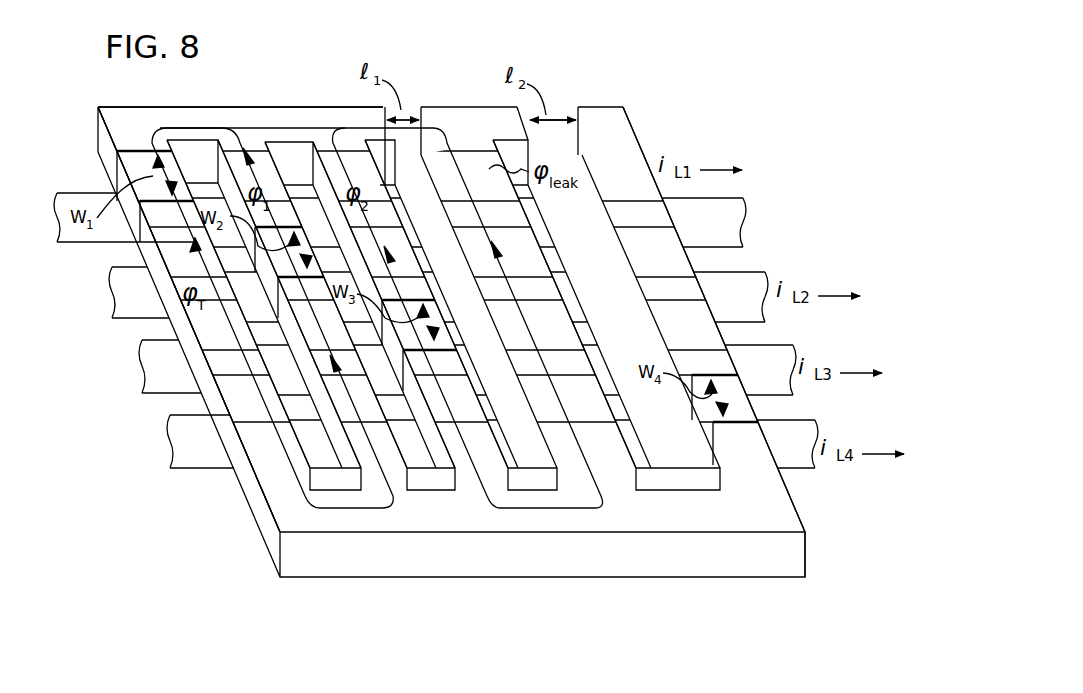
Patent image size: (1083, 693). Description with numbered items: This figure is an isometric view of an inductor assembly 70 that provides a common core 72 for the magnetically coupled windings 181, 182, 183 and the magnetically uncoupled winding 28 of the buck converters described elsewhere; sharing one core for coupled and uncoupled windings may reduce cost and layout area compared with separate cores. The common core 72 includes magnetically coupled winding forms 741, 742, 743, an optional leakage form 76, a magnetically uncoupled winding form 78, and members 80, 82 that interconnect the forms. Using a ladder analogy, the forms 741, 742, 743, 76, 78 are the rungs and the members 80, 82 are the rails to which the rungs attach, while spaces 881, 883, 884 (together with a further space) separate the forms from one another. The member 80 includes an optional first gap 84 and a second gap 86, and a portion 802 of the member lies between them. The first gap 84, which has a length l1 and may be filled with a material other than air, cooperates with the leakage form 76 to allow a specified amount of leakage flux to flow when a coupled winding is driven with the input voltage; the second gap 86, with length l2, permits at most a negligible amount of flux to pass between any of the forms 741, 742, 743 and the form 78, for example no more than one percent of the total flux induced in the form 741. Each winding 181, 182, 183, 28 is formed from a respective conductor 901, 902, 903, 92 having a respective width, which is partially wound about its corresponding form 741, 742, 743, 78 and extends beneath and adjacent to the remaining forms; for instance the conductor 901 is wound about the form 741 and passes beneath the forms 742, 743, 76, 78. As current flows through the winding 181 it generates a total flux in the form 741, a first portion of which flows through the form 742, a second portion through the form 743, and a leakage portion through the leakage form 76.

The inductor assembly 70 is at (208, 549).
The common core 72 is at (814, 589).
The magnetically coupled winding form 741 is at (204, 319).
The magnetically coupled winding form 742 is at (312, 304).
The magnetically coupled winding form 743 is at (410, 304).
The leakage form 76 is at (528, 304).
The magnetically uncoupled winding form 78 is at (693, 319).
The member 80 is at (331, 106).
The top plate portion 802 is at (273, 140).
The member 82 is at (329, 594).
The first gap 84 is at (413, 93).
The second gap 86 is at (569, 93).
The space 881 is at (218, 138).
The space 883 is at (461, 315).
The space 884 is at (606, 315).
The conductor 901 is at (96, 192).
The conductor 902 is at (124, 316).
The conductor 903 is at (150, 392).
The conductor 92 is at (186, 470).
The winding 181 is at (757, 186).
The winding 182 is at (777, 260).
The winding 183 is at (808, 340).
The magnetically uncoupled winding 28 is at (836, 412).